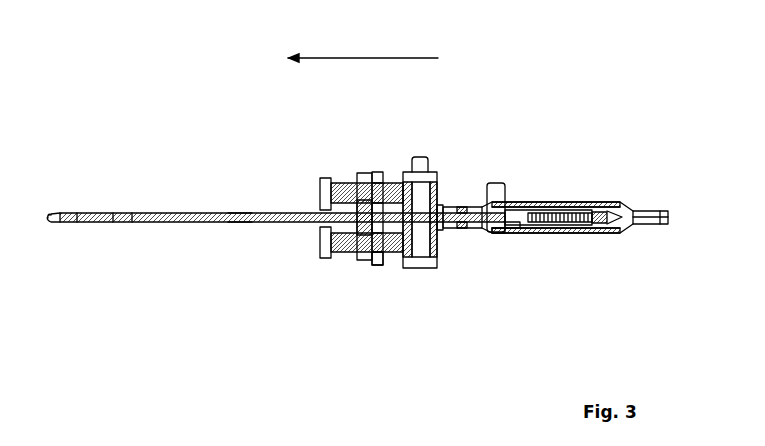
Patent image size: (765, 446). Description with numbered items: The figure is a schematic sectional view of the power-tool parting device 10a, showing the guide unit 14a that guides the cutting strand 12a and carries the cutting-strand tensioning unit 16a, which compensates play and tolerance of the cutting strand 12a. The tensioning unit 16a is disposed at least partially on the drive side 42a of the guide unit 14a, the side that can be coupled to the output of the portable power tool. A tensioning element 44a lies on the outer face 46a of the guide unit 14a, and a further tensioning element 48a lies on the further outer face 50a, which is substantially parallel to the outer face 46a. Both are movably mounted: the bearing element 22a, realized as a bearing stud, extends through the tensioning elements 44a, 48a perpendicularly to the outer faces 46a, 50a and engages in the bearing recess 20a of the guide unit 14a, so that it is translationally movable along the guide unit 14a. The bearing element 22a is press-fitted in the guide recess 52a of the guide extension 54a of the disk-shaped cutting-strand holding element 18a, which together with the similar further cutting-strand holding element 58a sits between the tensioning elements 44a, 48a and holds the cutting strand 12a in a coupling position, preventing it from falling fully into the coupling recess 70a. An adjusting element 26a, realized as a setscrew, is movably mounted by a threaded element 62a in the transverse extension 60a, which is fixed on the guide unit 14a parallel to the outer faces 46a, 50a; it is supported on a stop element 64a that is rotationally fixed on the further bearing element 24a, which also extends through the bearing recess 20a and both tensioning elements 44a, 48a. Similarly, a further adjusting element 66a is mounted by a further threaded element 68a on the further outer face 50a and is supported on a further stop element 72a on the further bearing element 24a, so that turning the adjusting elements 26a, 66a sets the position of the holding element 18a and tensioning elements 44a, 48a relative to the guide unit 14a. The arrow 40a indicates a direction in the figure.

The power-tool parting device 10a is at (596, 86).
The cutting strand 12a is at (57, 212).
The guide unit 14a is at (195, 215).
The cutting-strand tensioning unit 16a is at (574, 314).
The cutting-strand holding element 18a is at (543, 233).
The bearing recess 20a is at (466, 207).
The bearing element 22a is at (500, 194).
The further bearing element 24a is at (417, 269).
The adjusting element 26a is at (322, 240).
The direction of movement 40a is at (368, 57).
The drive side 42a is at (636, 232).
The tensioning element 44a is at (618, 233).
The outer face 46a is at (236, 223).
The further tensioning element 48a is at (610, 202).
The further outer face 50a is at (241, 212).
The guide recess 52a is at (497, 233).
The guide extension 54a is at (513, 229).
The further cutting-strand holding element 58a is at (591, 211).
The transverse extension 60a is at (362, 172).
The threaded element 62a is at (378, 266).
The stop element 64a is at (441, 240).
The further adjusting element 66a is at (322, 190).
The further threaded element 68a is at (378, 171).
The coupling recess 70a is at (574, 229).
The further stop element 72a is at (421, 157).